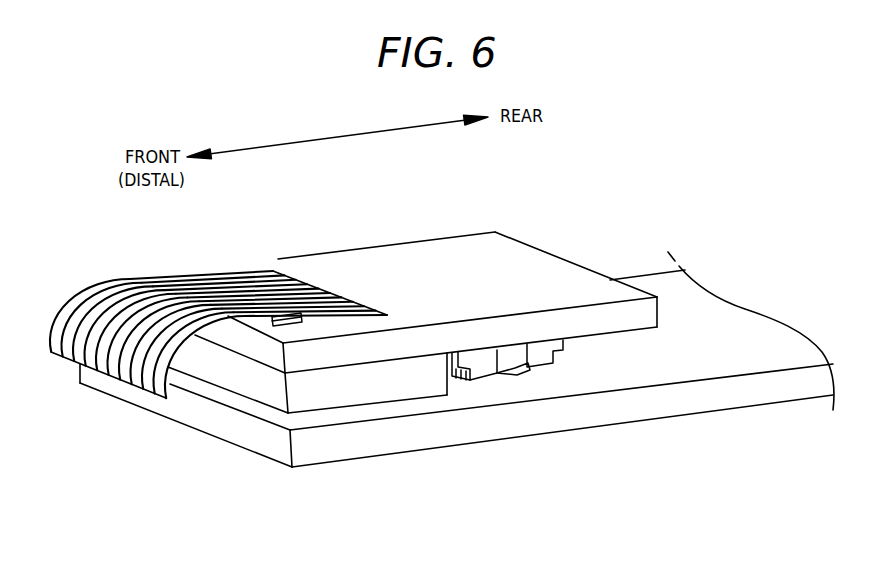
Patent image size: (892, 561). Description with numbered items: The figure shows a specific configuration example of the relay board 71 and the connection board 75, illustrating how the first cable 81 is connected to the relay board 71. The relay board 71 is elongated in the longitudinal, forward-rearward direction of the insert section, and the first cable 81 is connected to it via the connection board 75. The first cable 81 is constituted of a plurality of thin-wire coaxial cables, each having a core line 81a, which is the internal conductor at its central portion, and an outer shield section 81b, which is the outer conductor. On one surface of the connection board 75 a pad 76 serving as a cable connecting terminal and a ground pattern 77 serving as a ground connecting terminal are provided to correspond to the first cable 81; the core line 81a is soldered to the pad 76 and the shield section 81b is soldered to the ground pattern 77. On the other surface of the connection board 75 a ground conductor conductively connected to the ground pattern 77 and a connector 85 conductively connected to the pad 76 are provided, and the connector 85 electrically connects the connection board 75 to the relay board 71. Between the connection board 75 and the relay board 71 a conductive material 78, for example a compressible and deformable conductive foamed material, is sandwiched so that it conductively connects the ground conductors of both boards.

The relay board 71 is at (680, 402).
The connection board 75 is at (548, 263).
The pad 76 is at (303, 278).
The ground pattern 77 is at (308, 318).
The conductive material 78 is at (383, 383).
The first cable 81 is at (212, 301).
The core line 81a is at (243, 268).
The shield section 81b is at (178, 274).
The connector 85 is at (520, 367).